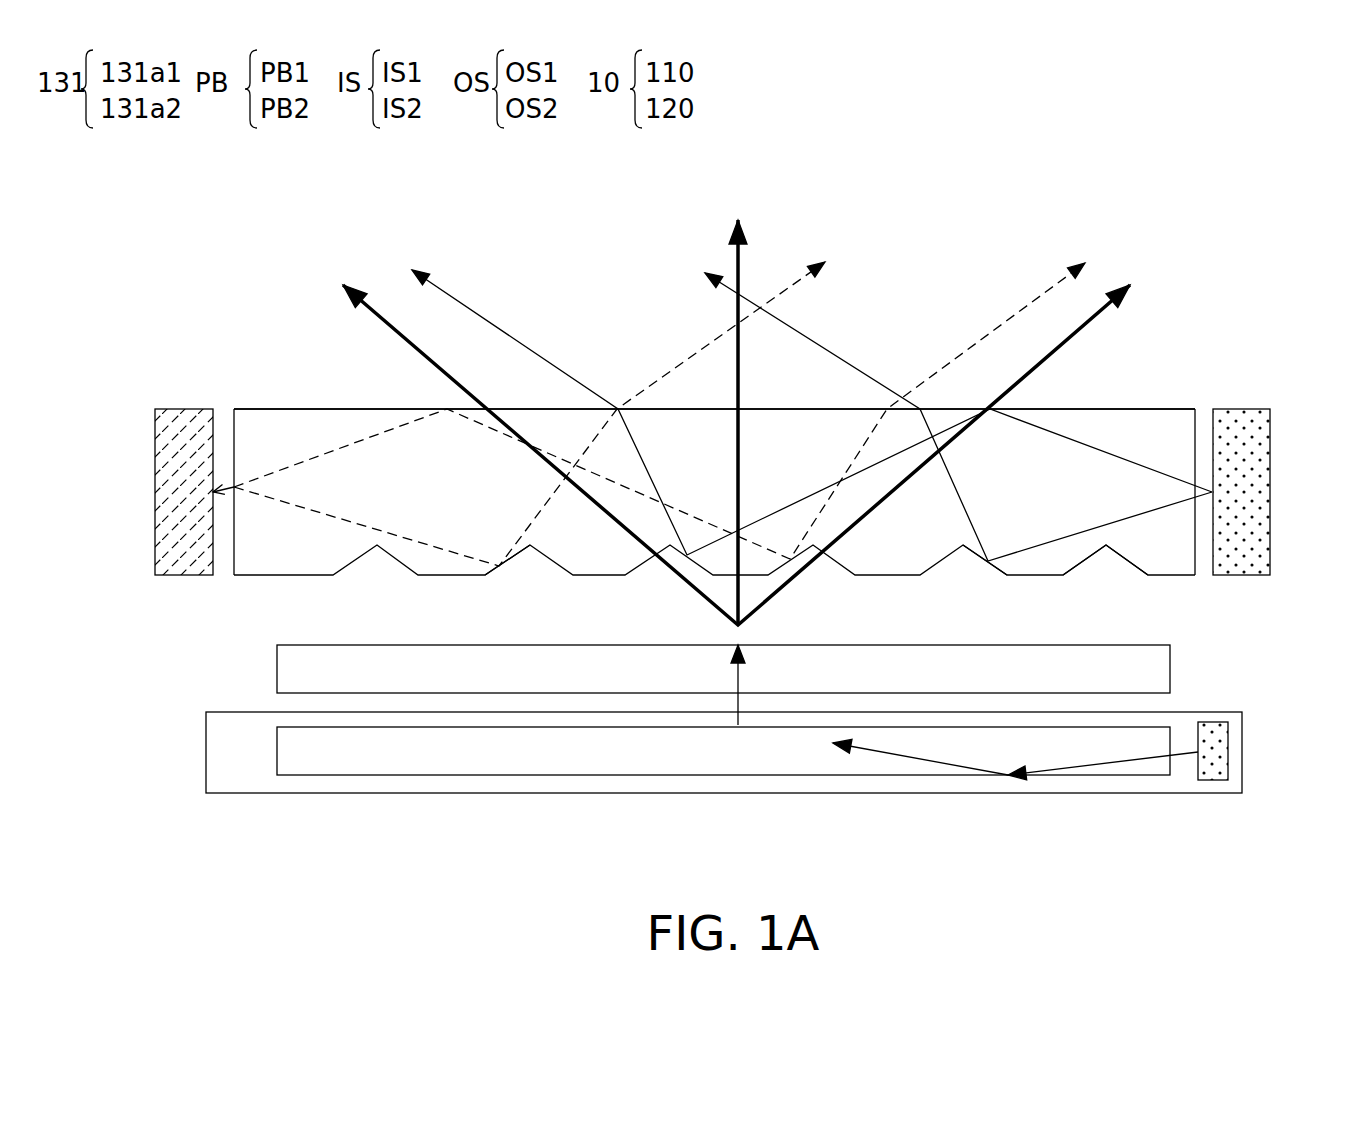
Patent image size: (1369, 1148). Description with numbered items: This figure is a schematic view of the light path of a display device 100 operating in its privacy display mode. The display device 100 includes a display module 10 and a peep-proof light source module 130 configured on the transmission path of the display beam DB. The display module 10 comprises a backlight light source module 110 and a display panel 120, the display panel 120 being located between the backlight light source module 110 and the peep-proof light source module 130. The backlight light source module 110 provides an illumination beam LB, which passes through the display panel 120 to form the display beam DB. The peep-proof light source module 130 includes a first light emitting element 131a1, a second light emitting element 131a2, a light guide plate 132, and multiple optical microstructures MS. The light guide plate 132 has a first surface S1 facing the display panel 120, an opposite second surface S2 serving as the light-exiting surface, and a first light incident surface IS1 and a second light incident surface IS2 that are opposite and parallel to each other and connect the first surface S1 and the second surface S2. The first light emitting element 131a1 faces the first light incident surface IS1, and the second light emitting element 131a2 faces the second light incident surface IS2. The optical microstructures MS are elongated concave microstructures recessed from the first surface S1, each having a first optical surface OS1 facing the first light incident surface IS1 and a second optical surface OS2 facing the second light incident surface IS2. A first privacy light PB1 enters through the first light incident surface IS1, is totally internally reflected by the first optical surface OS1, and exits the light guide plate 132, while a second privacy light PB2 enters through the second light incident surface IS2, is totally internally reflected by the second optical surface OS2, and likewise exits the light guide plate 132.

The display device 100 is at (1326, 859).
The display module 10 is at (709, 719).
The backlight light source module 110 is at (1242, 755).
The display panel 120 is at (277, 668).
The peep-proof light source module 130 is at (718, 446).
The first light emitting element 131a1 is at (1257, 497).
The second light emitting element 131a2 is at (175, 495).
The light guide plate 132 is at (370, 409).
The first surface S1 is at (285, 577).
The second surface S2 is at (525, 407).
The first light incident surface IS1 is at (1195, 537).
The second light incident surface IS2 is at (233, 537).
The first optical surface OS1 is at (998, 570).
The second optical surface OS2 is at (497, 565).
The optical microstructure MS is at (1135, 553).
The display beam DB is at (375, 307).
The first privacy light PB1 is at (460, 298).
The second privacy light PB2 is at (300, 462).
The illumination beam LB is at (738, 702).